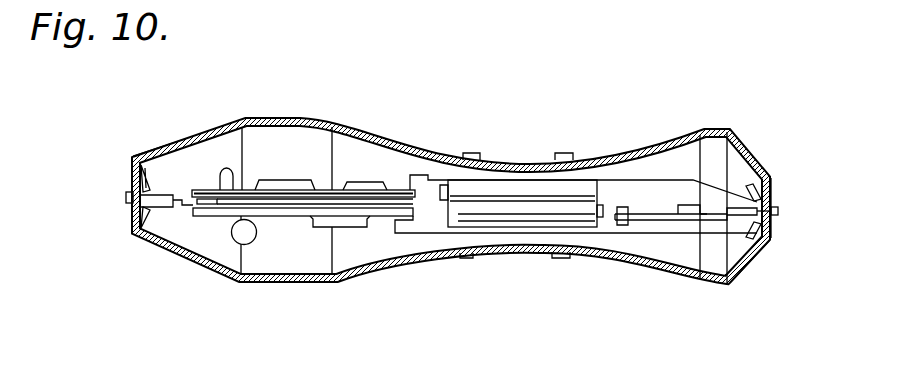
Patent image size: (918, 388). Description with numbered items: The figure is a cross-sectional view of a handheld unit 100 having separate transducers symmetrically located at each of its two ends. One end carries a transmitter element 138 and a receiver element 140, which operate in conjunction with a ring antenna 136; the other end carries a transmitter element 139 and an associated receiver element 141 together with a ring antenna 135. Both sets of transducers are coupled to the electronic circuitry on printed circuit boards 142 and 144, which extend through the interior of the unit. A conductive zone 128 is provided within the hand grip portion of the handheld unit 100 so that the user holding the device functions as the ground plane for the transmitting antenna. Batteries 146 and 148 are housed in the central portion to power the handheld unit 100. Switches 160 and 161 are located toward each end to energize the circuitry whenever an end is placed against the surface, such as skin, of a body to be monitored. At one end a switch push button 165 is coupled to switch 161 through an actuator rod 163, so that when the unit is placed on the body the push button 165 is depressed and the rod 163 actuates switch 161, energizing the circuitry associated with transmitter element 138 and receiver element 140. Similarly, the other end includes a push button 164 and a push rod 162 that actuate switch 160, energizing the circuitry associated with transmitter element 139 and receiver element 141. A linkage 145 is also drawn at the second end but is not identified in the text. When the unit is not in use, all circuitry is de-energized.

The handheld unit 100 is at (722, 185).
The conductive zone 128 is at (557, 155).
The ring antenna 135 is at (777, 173).
The ring antenna 136 is at (130, 162).
The transmitter element 138 is at (148, 186).
The transmitter element 139 is at (752, 187).
The receiver element 140 is at (155, 233).
The receiver element 141 is at (748, 275).
The printed circuit board 142 is at (325, 190).
The printed circuit board 144 is at (297, 216).
The actuating rod 145 is at (670, 221).
The battery 146 is at (504, 192).
The battery 148 is at (521, 216).
The switch 160 is at (690, 205).
The switch 161 is at (213, 216).
The push rod 162 is at (720, 198).
The actuator rod 163 is at (183, 210).
The push button 164 is at (779, 212).
The push button 165 is at (126, 198).